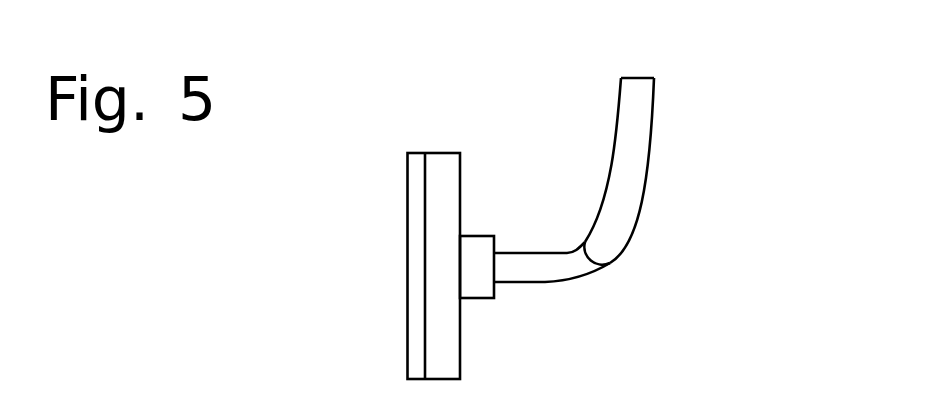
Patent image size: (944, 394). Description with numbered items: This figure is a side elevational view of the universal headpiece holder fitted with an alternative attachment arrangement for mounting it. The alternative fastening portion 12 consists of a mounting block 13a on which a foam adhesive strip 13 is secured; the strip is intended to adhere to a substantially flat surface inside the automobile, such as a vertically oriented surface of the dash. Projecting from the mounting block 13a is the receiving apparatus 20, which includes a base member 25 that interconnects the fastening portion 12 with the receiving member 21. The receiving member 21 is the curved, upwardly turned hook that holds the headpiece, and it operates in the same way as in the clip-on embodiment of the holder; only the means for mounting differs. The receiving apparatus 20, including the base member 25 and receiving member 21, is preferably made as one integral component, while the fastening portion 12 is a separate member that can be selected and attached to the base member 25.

The fastening portion 12 is at (383, 321).
The foam adhesive strip 13 is at (413, 240).
The mounting block 13a is at (445, 163).
The receiving apparatus 20 is at (685, 100).
The receiving member 21 is at (645, 185).
The base member 25 is at (525, 268).